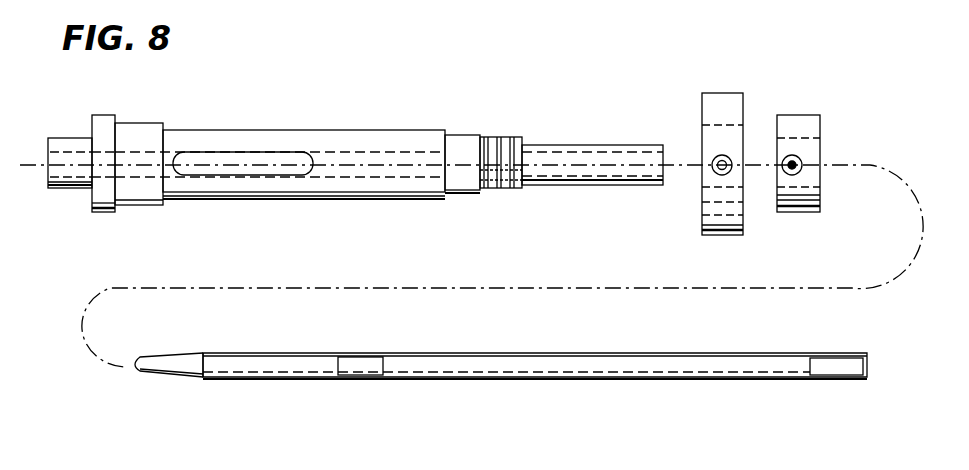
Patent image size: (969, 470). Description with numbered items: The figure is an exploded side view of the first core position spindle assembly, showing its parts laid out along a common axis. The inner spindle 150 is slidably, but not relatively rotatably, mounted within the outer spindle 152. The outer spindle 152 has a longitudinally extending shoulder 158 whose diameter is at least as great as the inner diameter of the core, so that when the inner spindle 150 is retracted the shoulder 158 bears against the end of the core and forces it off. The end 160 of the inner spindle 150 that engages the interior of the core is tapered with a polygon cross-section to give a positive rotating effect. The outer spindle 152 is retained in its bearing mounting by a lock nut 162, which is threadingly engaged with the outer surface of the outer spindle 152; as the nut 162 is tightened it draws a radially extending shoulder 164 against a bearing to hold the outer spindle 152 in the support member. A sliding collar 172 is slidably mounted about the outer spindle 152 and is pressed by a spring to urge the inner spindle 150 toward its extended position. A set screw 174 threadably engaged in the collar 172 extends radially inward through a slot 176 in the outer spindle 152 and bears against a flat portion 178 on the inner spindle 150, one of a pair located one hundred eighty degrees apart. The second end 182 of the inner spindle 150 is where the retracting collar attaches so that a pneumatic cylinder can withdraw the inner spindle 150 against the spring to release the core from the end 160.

The inner spindle 150 is at (600, 373).
The outer spindle 152 is at (395, 138).
The longitudinally extending shoulder 158 is at (68, 147).
The end of the inner spindle 160 is at (175, 362).
The lock nut 162 is at (800, 120).
The radially extending shoulder 164 is at (105, 125).
The sliding collar 172 is at (725, 103).
The set screw 174 is at (714, 158).
The slot 176 is at (255, 157).
The flat portion 178 is at (358, 365).
The second end of the inner spindle 182 is at (840, 368).